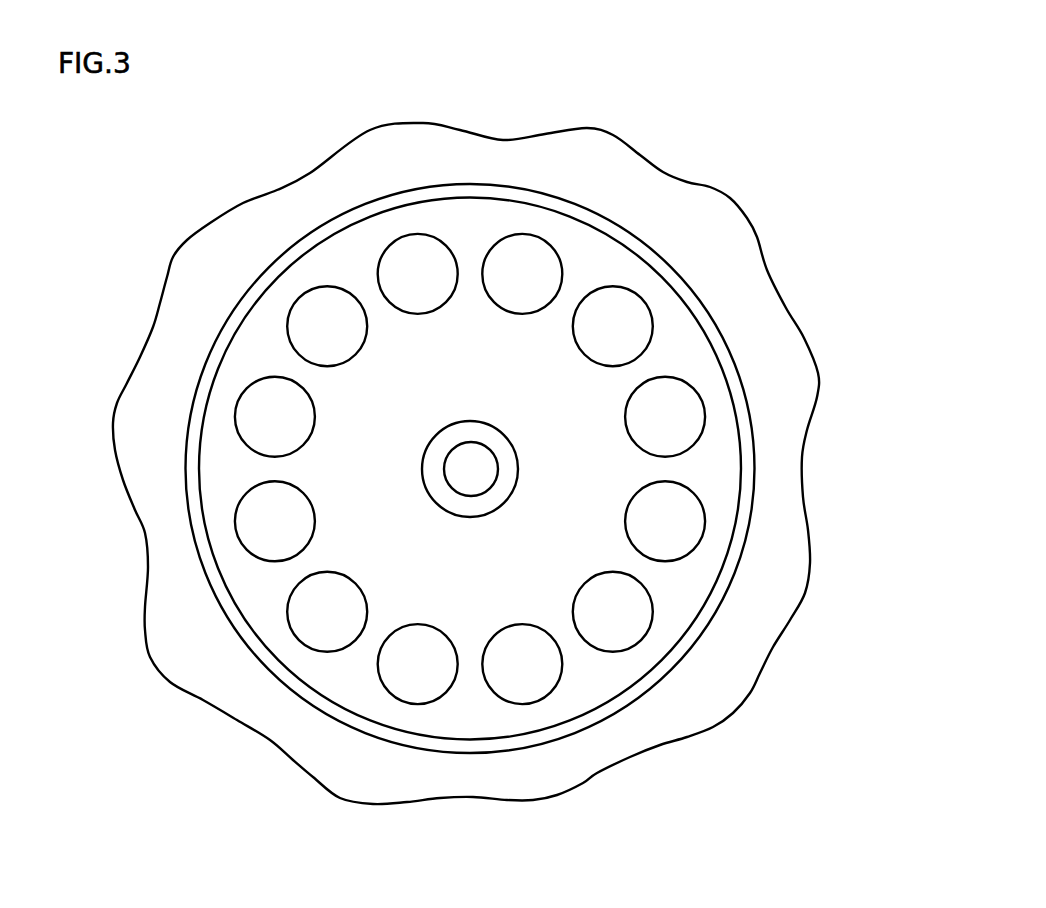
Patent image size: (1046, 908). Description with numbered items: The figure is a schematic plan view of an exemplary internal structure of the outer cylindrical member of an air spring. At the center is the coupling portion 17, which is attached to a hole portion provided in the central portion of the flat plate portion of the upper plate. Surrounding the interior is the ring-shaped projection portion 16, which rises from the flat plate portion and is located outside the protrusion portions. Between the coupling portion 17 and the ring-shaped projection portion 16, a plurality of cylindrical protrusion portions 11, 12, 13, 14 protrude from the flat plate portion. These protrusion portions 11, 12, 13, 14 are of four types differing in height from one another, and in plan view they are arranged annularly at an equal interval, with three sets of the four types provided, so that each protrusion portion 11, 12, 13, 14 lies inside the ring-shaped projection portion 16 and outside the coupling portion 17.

The protrusion portion 11 is at (632, 315).
The protrusion portion 12 is at (524, 258).
The protrusion portion 13 is at (317, 312).
The protrusion portion 14 is at (417, 256).
The ring-shaped projection portion 16 is at (713, 328).
The coupling portion 17 is at (460, 475).